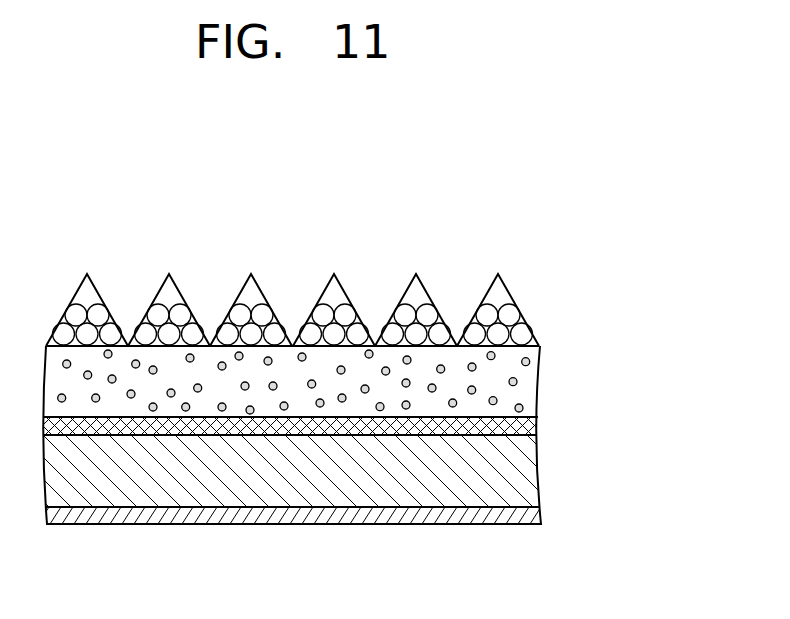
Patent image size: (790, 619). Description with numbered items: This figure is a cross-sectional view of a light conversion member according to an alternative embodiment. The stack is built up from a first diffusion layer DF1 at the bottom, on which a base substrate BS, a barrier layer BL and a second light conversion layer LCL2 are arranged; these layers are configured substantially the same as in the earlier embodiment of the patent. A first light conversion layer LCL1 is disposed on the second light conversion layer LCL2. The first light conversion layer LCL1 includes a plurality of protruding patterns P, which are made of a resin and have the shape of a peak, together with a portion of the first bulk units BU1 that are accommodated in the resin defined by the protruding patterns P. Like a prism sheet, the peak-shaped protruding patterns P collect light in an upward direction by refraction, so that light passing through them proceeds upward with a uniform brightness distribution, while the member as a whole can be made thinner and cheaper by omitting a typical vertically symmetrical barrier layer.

The protruding patterns P is at (498, 294).
The first bulk units BU1 is at (520, 332).
The first light conversion layer LCL1 is at (630, 275).
The second light conversion layer LCL2 is at (532, 382).
The barrier layer BL is at (532, 425).
The base substrate BS is at (528, 468).
The first diffusion layer DF1 is at (532, 515).